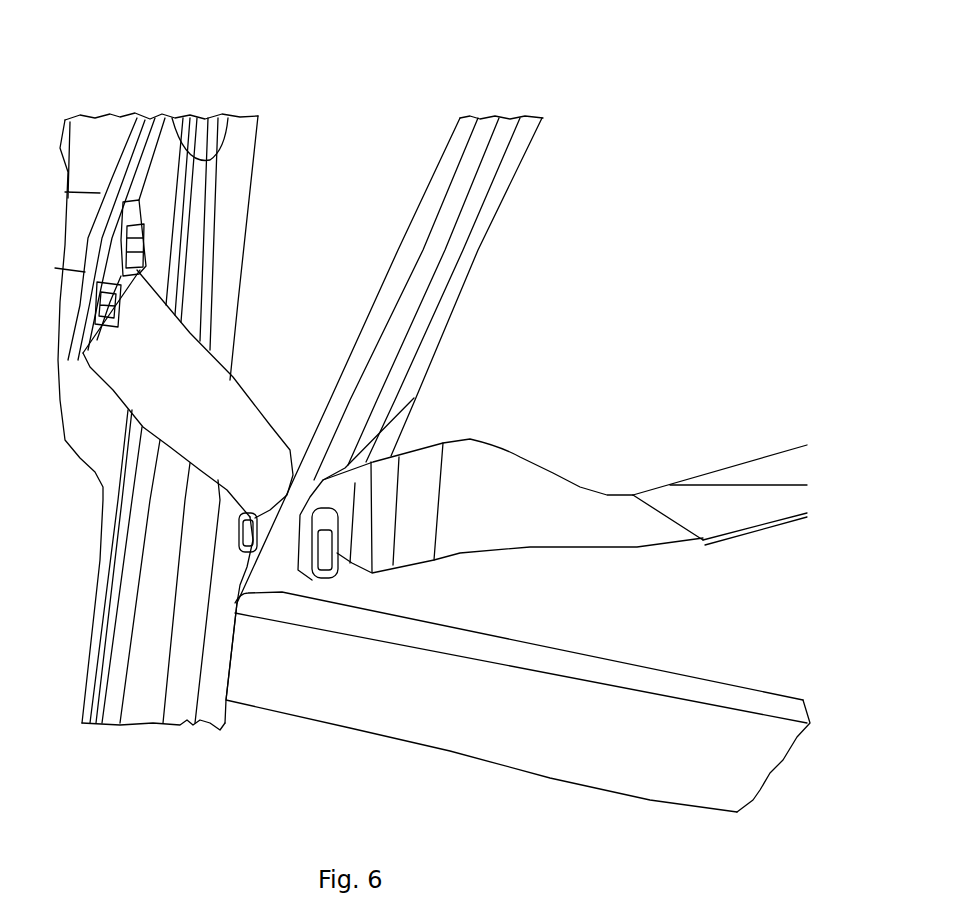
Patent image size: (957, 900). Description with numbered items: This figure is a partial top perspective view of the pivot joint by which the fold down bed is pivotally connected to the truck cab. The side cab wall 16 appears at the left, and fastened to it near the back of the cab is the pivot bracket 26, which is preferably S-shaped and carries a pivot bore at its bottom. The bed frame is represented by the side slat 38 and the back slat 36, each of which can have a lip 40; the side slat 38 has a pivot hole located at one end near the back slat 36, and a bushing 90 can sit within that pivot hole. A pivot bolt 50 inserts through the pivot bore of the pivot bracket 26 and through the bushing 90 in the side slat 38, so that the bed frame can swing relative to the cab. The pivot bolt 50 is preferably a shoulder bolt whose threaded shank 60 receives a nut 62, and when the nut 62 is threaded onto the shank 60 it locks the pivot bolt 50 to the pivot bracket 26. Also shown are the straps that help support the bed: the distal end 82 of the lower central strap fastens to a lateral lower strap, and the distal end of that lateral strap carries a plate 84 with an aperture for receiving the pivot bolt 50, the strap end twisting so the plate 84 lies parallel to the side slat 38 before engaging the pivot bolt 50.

The side cab wall 16 is at (122, 182).
The pivot bracket 26 is at (172, 330).
The back slat 36 is at (373, 700).
The side slat 38 is at (420, 273).
The lip 40 is at (463, 133).
The pivot bolt 50 is at (337, 548).
The threaded shank 60 is at (236, 527).
The nut 62 is at (238, 544).
The distal end of lower central strap 82 is at (420, 503).
The plate 84 is at (414, 398).
The bushing 90 is at (314, 480).